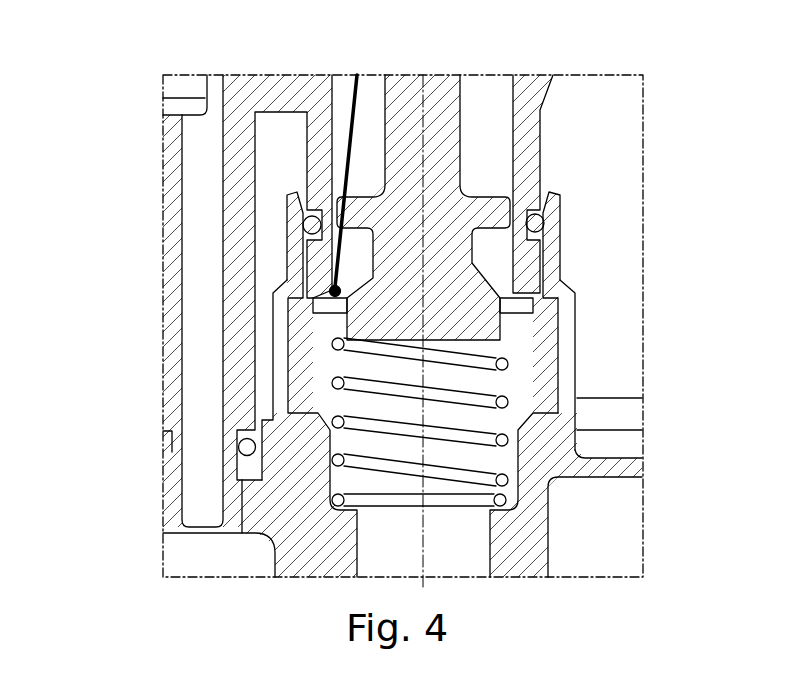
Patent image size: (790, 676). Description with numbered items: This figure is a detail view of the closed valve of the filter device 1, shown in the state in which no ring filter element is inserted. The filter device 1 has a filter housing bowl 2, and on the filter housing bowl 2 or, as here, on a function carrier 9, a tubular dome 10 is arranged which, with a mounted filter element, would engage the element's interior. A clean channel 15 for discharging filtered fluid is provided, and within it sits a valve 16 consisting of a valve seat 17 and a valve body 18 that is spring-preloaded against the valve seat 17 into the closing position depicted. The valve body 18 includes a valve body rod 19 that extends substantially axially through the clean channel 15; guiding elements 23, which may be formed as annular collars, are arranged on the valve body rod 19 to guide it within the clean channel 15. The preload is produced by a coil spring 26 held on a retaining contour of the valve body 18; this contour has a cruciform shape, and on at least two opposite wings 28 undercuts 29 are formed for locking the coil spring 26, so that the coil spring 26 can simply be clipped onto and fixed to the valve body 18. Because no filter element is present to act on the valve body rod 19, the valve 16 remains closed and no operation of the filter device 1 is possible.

The filter device 1 is at (110, 143).
The filter housing bowl 2 is at (590, 381).
The function carrier 9 is at (565, 102).
The tubular dome 10 is at (310, 77).
The clean channel 15 is at (493, 77).
The valve 16 is at (318, 352).
The valve seat 17 is at (574, 290).
The valve body 18 is at (330, 312).
The valve body rod 19 is at (397, 77).
The guiding elements 23 is at (518, 205).
The coil spring 26 is at (332, 455).
The wings 28 is at (466, 330).
The undercuts 29 is at (494, 316).